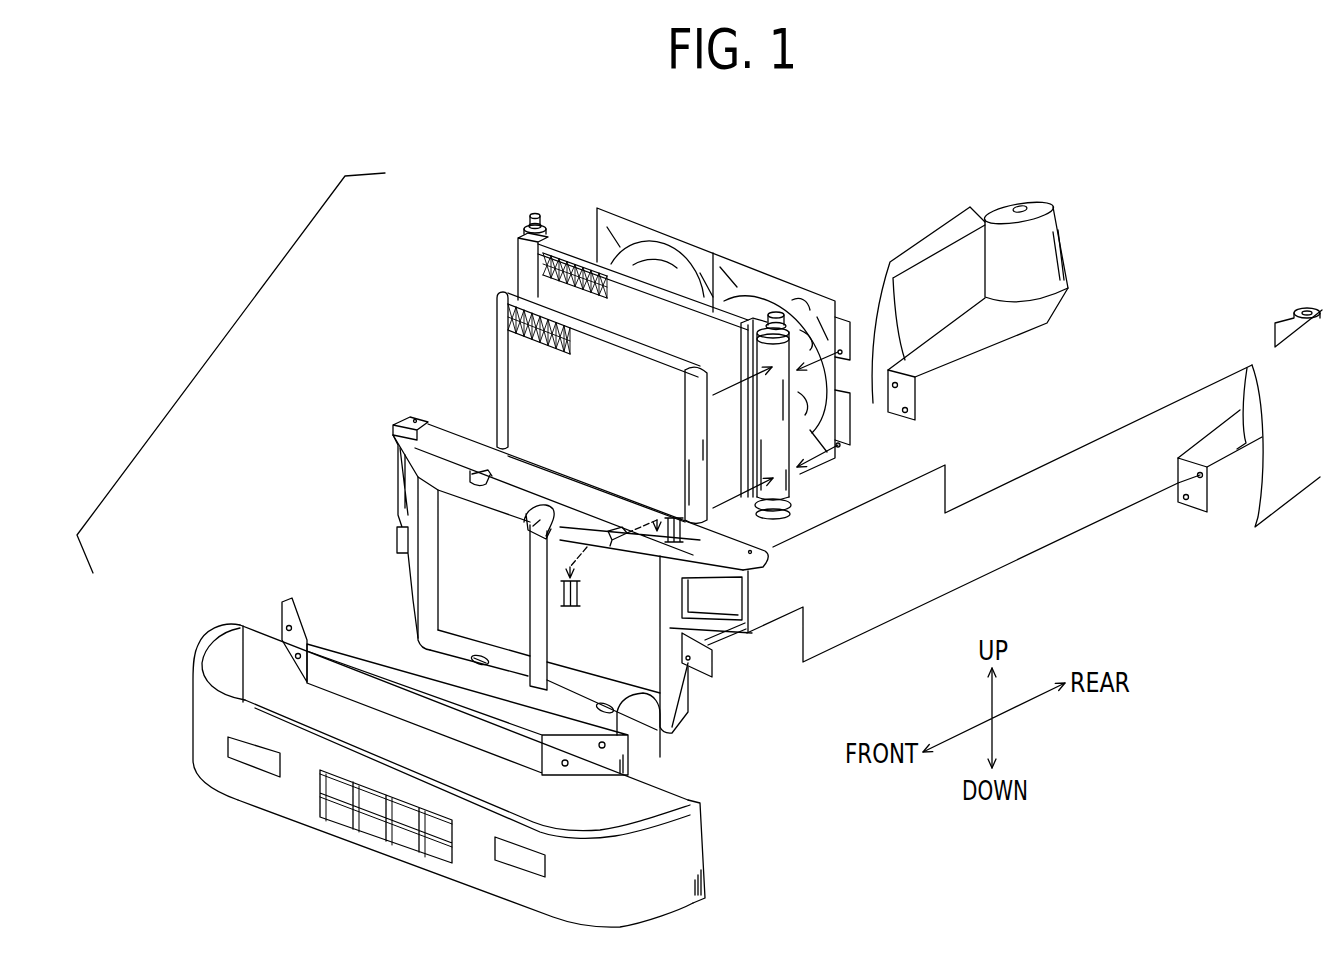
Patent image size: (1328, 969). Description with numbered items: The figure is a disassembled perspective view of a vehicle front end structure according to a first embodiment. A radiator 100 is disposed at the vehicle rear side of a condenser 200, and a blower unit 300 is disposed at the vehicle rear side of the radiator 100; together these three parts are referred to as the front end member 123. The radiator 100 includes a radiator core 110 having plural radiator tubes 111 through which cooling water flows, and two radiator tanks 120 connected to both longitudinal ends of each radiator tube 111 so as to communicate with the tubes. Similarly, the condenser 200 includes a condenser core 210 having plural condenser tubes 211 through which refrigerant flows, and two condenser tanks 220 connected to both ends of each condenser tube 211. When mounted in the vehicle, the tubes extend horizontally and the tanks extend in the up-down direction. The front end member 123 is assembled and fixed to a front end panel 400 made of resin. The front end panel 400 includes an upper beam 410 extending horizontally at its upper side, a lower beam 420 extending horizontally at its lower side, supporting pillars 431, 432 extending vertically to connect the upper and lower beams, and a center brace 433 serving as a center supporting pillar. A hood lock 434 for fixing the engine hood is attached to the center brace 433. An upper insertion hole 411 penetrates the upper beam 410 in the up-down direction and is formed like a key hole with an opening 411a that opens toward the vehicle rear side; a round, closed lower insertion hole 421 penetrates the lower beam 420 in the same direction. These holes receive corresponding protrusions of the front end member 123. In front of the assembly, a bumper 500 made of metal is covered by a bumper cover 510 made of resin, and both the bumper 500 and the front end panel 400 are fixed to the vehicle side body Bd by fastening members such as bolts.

The radiator 100 is at (633, 285).
The radiator core 110 is at (598, 258).
The radiator tubes 111 is at (600, 268).
The radiator tanks 120 is at (527, 250).
The front end member 123 is at (635, 361).
The condenser 200 is at (550, 305).
The condenser core 210 is at (586, 333).
The condenser tubes 211 is at (588, 352).
The condenser tanks 220 is at (497, 337).
The blower unit 300 is at (733, 268).
The front end panel 400 is at (382, 420).
The upper beam 410 is at (393, 425).
The upper insertion hole 411 is at (477, 477).
The opening 411a is at (490, 470).
The lower beam 420 is at (604, 745).
The lower insertion hole 421 is at (415, 640).
The supporting pillar 431 is at (713, 647).
The supporting pillar 432 is at (407, 577).
The center brace 433 is at (700, 685).
The hood lock 434 is at (548, 505).
The bumper 500 is at (327, 667).
The bumper cover 510 is at (686, 852).
The vehicle side body Bd is at (960, 373).